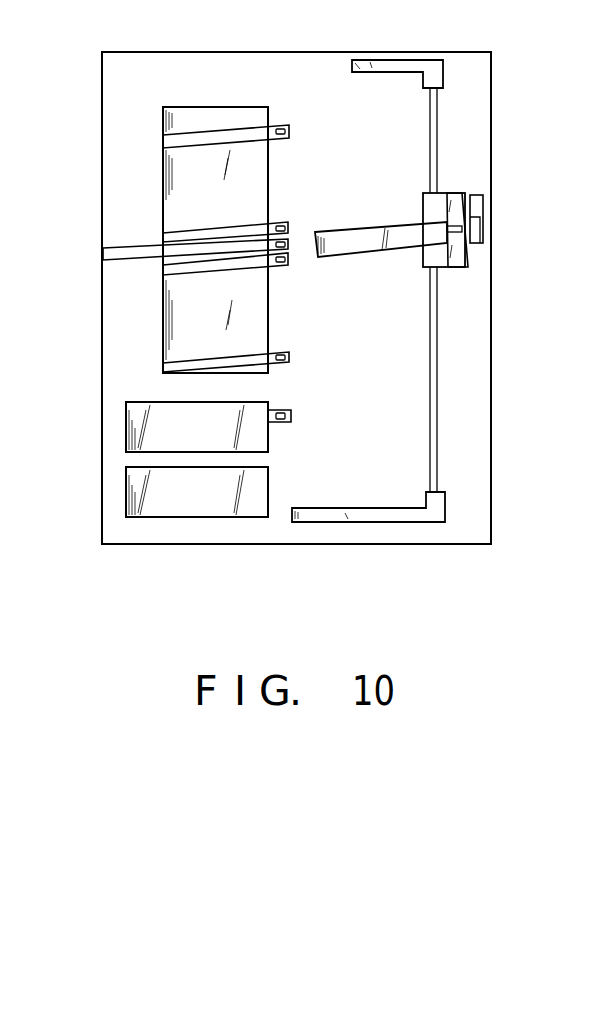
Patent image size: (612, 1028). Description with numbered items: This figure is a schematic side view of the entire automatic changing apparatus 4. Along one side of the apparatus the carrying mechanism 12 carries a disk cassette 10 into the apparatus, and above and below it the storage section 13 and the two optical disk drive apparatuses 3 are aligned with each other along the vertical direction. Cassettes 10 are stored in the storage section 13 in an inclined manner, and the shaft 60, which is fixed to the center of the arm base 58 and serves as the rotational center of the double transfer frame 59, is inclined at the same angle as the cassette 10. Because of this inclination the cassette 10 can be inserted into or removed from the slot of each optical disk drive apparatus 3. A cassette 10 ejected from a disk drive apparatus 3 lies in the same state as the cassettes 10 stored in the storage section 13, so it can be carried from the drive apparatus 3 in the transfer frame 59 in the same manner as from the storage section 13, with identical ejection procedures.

The optical disk drive apparatus 3 is at (134, 432).
The changing apparatus 4 is at (101, 167).
The disk cassette 10 is at (285, 126).
The carrying mechanism 12 is at (128, 250).
The storage section 13 is at (192, 88).
The arm base 58 is at (468, 258).
The double transfer frame 59 is at (366, 240).
The shaft 60 is at (452, 215).